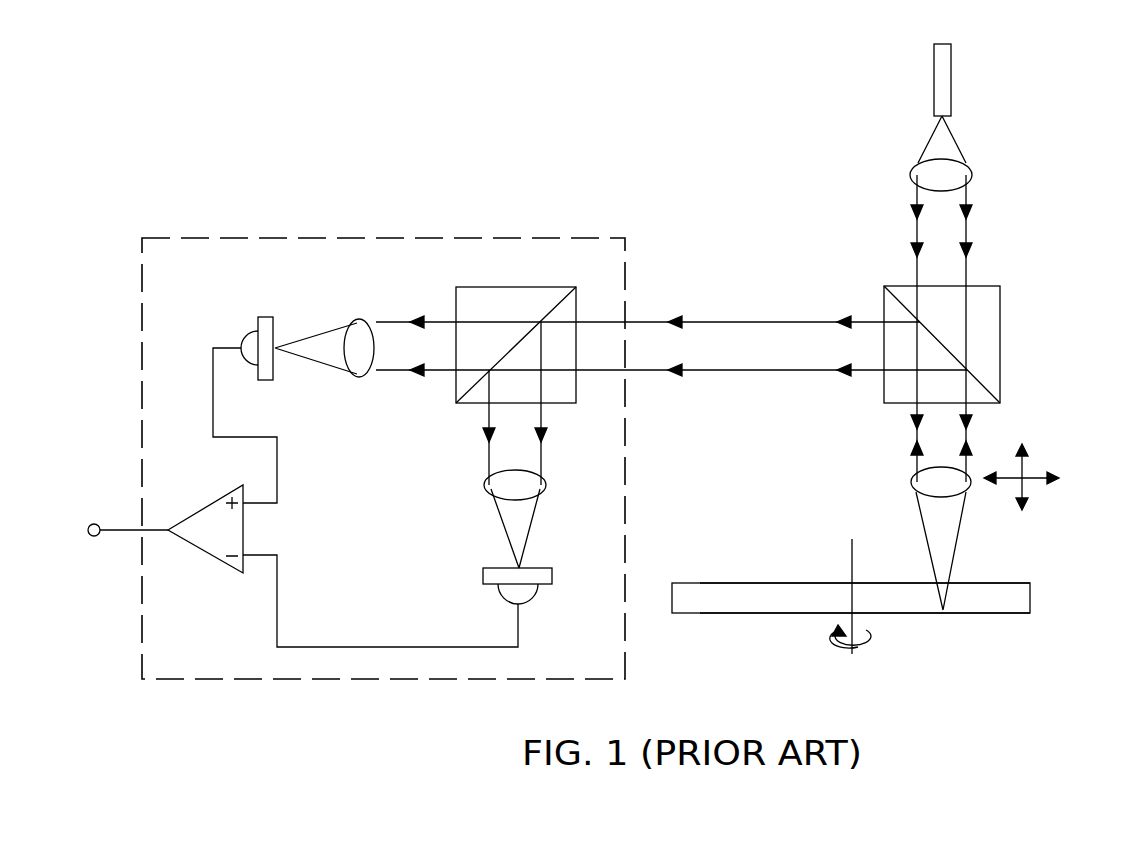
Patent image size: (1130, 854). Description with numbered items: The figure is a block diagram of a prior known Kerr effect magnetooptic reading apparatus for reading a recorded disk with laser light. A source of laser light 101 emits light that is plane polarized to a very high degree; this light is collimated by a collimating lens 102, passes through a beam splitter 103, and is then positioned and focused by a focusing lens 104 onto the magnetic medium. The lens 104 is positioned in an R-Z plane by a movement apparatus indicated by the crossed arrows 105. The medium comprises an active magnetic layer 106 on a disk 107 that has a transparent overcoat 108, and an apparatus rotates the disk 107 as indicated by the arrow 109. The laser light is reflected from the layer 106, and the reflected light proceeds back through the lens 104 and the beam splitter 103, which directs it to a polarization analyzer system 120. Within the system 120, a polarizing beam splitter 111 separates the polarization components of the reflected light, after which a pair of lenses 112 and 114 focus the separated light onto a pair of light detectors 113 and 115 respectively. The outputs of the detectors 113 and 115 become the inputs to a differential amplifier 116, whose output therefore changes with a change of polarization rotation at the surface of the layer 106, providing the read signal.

The source of laser light 101 is at (948, 85).
The collimating lens 102 is at (958, 161).
The beam splitter 103 is at (990, 330).
The focusing lens 104 is at (958, 488).
The crossed arrows 105 is at (1032, 472).
The active magnetic layer 106 is at (990, 614).
The disk 107 is at (1018, 601).
The transparent overcoat 108 is at (996, 583).
The arrow 109 is at (868, 638).
The polarizing beam splitter 111 is at (516, 294).
The lens 112 is at (541, 491).
The light detector 113 is at (525, 592).
The lens 114 is at (360, 322).
The light detector 115 is at (264, 330).
The differential amplifier 116 is at (224, 506).
The polarization analyzer system 120 is at (388, 226).